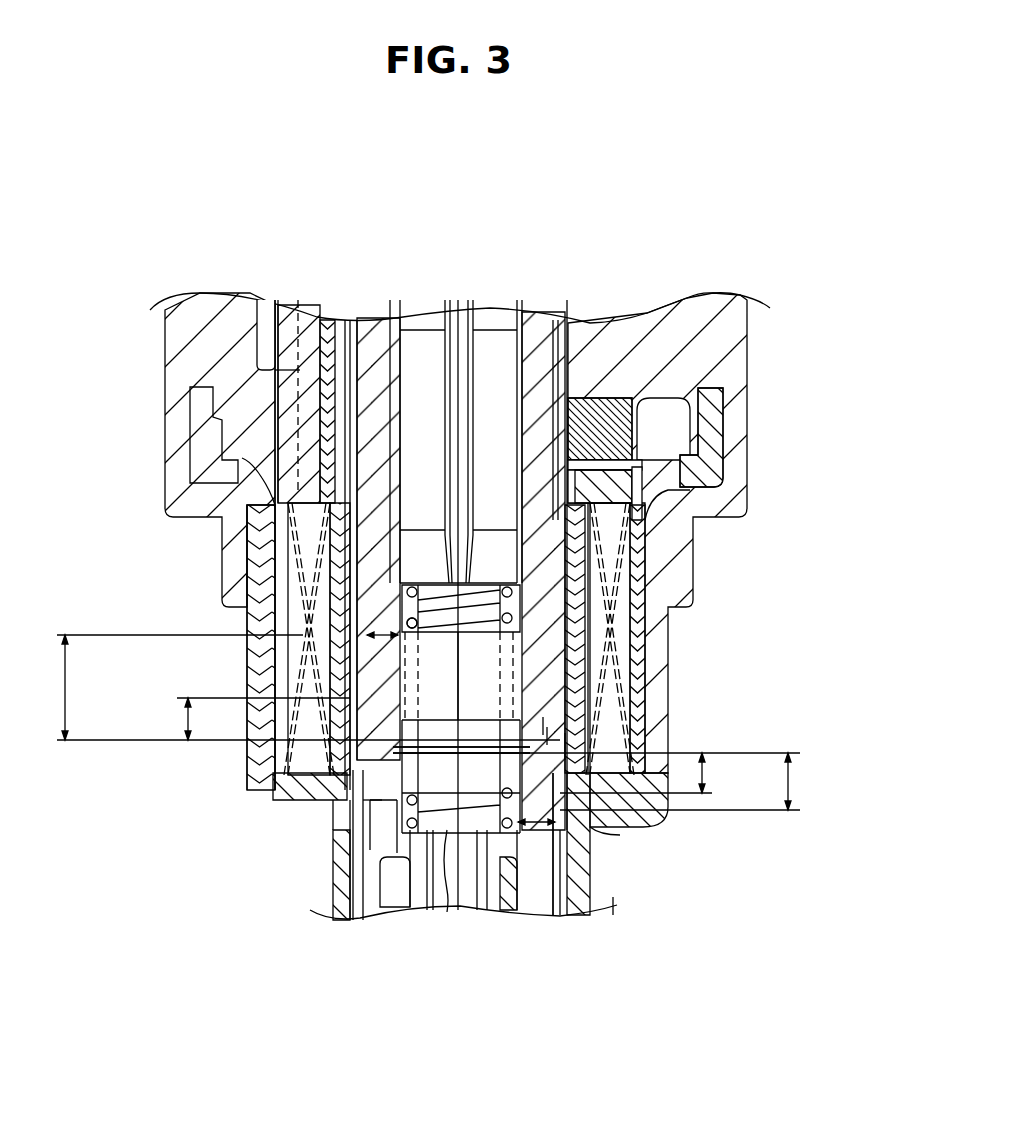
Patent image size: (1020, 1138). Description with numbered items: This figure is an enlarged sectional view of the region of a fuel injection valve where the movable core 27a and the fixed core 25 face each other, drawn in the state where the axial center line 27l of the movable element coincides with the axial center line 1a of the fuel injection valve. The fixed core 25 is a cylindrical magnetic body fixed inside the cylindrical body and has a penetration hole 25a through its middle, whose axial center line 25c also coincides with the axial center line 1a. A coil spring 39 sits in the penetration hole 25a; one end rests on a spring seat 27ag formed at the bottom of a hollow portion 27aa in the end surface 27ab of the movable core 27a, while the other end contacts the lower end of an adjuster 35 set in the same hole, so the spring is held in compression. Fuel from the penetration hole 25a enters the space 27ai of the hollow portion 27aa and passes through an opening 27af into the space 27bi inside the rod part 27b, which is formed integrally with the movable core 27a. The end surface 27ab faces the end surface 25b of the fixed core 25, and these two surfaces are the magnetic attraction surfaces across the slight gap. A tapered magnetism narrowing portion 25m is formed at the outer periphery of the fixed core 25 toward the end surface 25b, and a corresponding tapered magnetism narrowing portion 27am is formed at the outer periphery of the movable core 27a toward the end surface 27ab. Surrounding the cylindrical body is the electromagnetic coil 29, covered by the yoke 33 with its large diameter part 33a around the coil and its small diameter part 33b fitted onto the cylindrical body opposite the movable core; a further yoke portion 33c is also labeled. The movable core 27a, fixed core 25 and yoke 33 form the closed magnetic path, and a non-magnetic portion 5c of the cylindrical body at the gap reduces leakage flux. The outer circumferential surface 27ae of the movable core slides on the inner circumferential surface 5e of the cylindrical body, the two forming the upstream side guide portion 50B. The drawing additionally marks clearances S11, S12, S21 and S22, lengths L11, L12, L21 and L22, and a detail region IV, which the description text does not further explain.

The axial center line 1a is at (465, 330).
The axial center line of the fixed core 25c is at (459, 441).
The fixed core 25 is at (547, 572).
The penetration hole 25a is at (513, 643).
The end surface of the fixed core 25b is at (573, 733).
The magnetism narrowing portion 25m is at (547, 727).
The movable core 27a is at (337, 830).
The hollow portion 27aa is at (448, 718).
The space of the hollow portion 27ai is at (473, 718).
The end surface of the movable core 27ab is at (543, 717).
The magnetism narrowing portion 27am is at (563, 738).
The outer circumferential surface of the movable core 27ae is at (593, 840).
The opening 27af is at (438, 883).
The spring seat 27ag is at (480, 850).
The axial center line of the movable element 27l is at (457, 890).
The rod part 27b is at (513, 873).
The space of the inner side of the rod part 27bi is at (520, 890).
The electromagnetic coil 29 is at (623, 590).
The yoke 33 is at (446, 555).
The large diameter part 33a is at (262, 760).
The small diameter part 33b is at (340, 882).
The coil flange 33c is at (287, 808).
The adjuster 35 is at (495, 360).
The coil spring 39 is at (410, 590).
The non-magnetic portion 5c is at (288, 770).
The inner circumferential surface 5e is at (357, 893).
The upstream side guide portion 50B is at (350, 890).
The gap S11 is at (380, 822).
The gap S12 is at (223, 597).
The gap S21 is at (536, 822).
The gap S22 is at (613, 897).
The length L11 is at (251, 719).
The length L12 is at (293, 687).
The length L21 is at (600, 773).
The length L22 is at (695, 781).
The section IV is at (602, 828).